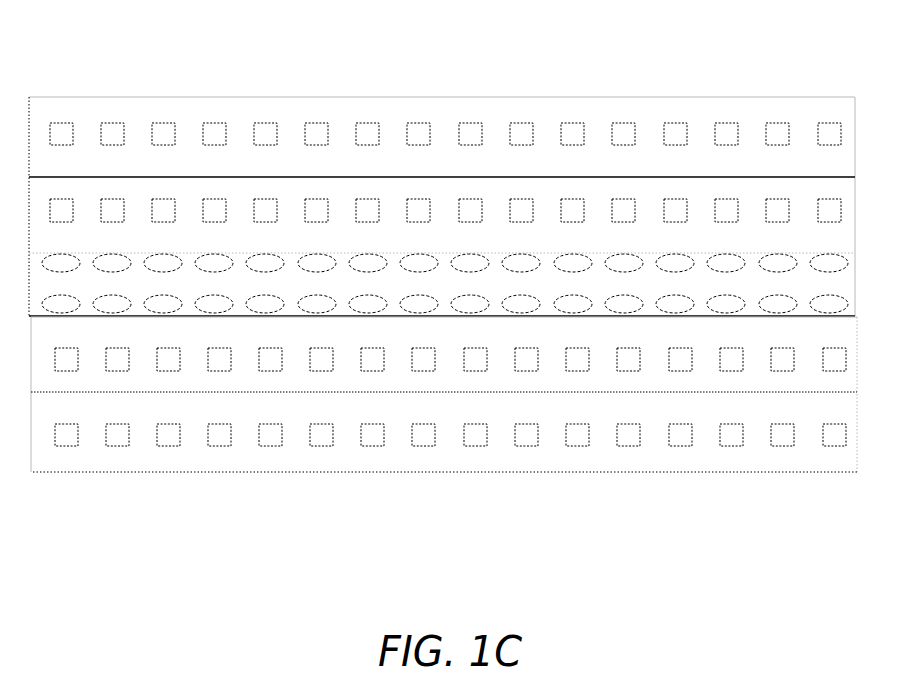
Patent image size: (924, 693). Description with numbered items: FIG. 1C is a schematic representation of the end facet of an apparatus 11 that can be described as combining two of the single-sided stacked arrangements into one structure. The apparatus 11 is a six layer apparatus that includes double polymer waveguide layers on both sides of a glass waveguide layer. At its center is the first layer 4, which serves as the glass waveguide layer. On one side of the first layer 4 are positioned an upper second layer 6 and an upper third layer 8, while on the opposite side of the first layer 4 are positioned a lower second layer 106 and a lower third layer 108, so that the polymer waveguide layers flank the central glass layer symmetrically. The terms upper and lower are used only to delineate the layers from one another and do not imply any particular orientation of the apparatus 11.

The apparatus 11 is at (326, 84).
The third layer 8 is at (49, 124).
The second layer 6 is at (39, 200).
The first layer 4 is at (57, 288).
The lower second layer 106 is at (829, 342).
The lower third layer 108 is at (845, 420).